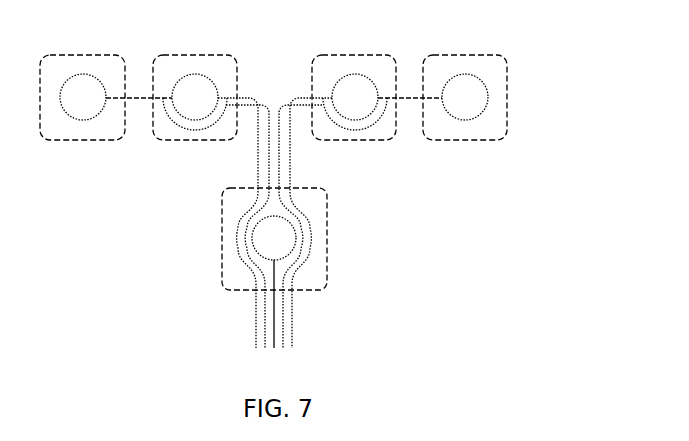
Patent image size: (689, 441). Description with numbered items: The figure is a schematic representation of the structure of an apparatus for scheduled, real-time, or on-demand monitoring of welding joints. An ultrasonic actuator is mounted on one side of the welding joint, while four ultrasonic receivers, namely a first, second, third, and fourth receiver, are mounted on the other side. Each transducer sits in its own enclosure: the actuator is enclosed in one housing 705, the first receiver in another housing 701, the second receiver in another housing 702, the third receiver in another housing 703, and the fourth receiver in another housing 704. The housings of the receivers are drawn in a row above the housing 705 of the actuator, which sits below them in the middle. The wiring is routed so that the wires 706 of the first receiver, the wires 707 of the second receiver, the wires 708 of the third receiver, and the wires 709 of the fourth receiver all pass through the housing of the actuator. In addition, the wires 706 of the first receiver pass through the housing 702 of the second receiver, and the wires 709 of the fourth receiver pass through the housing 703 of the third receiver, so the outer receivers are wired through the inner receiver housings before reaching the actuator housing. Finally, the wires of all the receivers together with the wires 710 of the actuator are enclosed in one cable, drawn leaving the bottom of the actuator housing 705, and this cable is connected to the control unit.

The housing 701 is at (67, 55).
The housing 702 is at (177, 55).
The housing 703 is at (340, 55).
The housing 704 is at (475, 55).
The housing 705 is at (323, 255).
The wires 706 is at (137, 150).
The wires 707 is at (216, 223).
The wires 708 is at (333, 223).
The wires 709 is at (407, 148).
The wires 710 is at (277, 323).